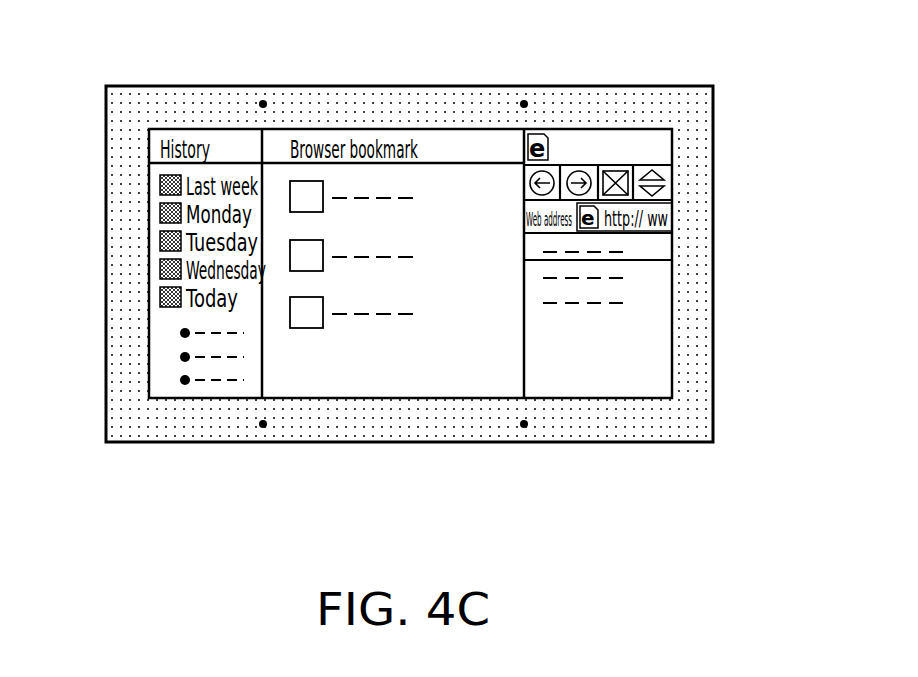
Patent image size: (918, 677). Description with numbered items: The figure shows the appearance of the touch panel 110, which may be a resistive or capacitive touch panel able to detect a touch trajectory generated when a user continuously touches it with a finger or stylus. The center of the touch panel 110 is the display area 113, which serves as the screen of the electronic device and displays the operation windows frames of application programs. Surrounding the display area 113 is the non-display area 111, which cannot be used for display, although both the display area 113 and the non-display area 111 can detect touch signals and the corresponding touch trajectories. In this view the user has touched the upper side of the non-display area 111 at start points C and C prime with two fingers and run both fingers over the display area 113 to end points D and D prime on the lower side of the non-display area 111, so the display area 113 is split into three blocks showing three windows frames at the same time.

The touch panel 110 is at (846, 389).
The non-display area 111 is at (163, 105).
The display area 113 is at (163, 336).